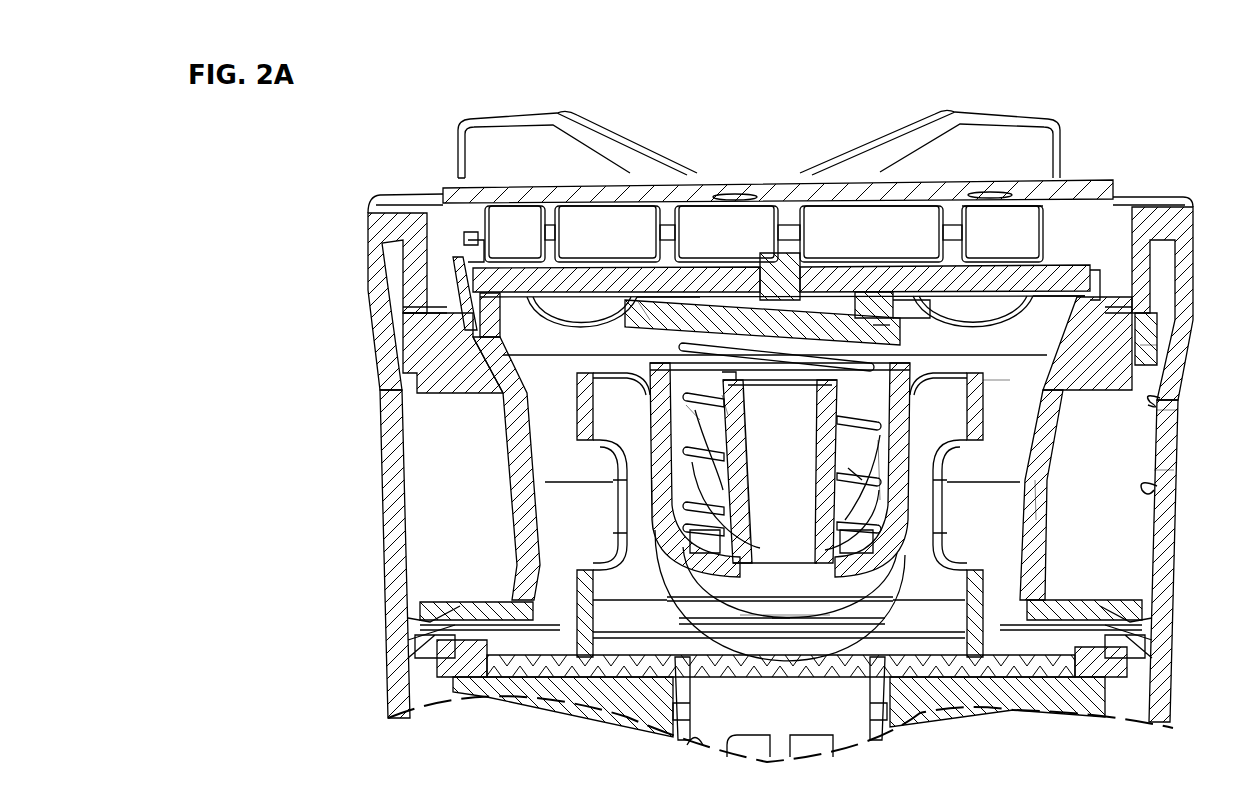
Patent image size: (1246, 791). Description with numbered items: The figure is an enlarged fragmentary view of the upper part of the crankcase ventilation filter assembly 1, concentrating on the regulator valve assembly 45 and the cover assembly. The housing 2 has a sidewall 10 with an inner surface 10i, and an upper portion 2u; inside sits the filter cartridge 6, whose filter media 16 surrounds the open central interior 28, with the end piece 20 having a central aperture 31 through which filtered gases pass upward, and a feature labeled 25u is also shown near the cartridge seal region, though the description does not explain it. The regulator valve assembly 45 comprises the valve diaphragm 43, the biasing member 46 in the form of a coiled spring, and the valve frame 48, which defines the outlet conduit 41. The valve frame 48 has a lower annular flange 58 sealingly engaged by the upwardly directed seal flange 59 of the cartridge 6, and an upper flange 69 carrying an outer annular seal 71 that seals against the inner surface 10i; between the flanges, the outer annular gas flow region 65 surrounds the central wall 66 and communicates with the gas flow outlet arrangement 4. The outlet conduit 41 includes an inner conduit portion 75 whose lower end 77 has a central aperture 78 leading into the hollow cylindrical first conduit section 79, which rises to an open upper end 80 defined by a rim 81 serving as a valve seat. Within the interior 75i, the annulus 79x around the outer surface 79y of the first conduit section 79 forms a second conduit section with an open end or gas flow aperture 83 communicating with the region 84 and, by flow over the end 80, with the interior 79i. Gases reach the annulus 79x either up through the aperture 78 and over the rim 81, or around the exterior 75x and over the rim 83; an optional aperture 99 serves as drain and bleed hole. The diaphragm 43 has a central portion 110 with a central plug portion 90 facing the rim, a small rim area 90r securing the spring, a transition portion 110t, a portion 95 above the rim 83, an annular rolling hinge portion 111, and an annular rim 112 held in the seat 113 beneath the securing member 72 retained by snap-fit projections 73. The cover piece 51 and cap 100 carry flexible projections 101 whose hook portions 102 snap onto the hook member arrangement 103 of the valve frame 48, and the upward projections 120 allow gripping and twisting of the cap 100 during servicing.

The crankcase ventilation filter assembly 1 is at (345, 536).
The housing 2 is at (1170, 582).
The upper portion of housing 2u is at (1172, 520).
The gas flow outlet arrangement 4 is at (866, 443).
The filter cartridge 6 is at (1095, 693).
The sidewall 10 is at (1176, 455).
The inner surface of housing sidewall 10i is at (1150, 402).
The filter media 16 is at (915, 712).
The end piece 20 is at (596, 666).
The upper retaining barb 25u is at (1138, 642).
The open central interior 28 is at (705, 730).
The central aperture 31 is at (692, 668).
The outlet conduit 41 is at (676, 372).
The valve diaphragm 43 is at (915, 307).
The regulator valve assembly 45 is at (1000, 243).
The biasing member 46 is at (858, 477).
The valve frame 48 is at (1032, 466).
The cover piece 51 is at (1097, 195).
The lower annular flange 58 is at (1078, 600).
The seal flange 59 is at (1118, 625).
The outer annular gas flow region 65 is at (1154, 490).
The central wall 66 is at (1040, 497).
The upper flange 69 is at (1120, 340).
The outer annular seal 71 is at (1150, 350).
The securing member 72 is at (590, 278).
The snap-fit projections 73 is at (462, 281).
The inner conduit portion 75 is at (893, 537).
The interior of inner conduit portion 75i is at (876, 457).
The exterior of inner conduit portion 75x is at (661, 500).
The lower end 77 is at (826, 572).
The central aperture 78 is at (745, 563).
The first conduit section 79 is at (740, 495).
The interior of first conduit section 79i is at (743, 432).
The annulus 79x is at (690, 412).
The outer surface of first conduit section 79y is at (728, 410).
The upper end 80 is at (730, 376).
The rim 81 is at (828, 377).
The gas flow aperture 83 is at (905, 368).
The region within housing 84 is at (982, 346).
The central plug portion 90 is at (793, 322).
The small rim area 90r is at (872, 329).
The portion of diaphragm 95 is at (642, 323).
The aperture 99 is at (781, 615).
The cap 100 is at (735, 180).
The flexible projections 101 is at (490, 222).
The hook portion 102 is at (490, 256).
The hook member arrangement 103 is at (468, 241).
The central portion 110 is at (745, 314).
The transition portion 110t is at (865, 302).
The annular rolling hinge portion 111 is at (570, 324).
The annular rim 112 is at (492, 314).
The seat 113 is at (478, 322).
The projections 120 is at (538, 110).